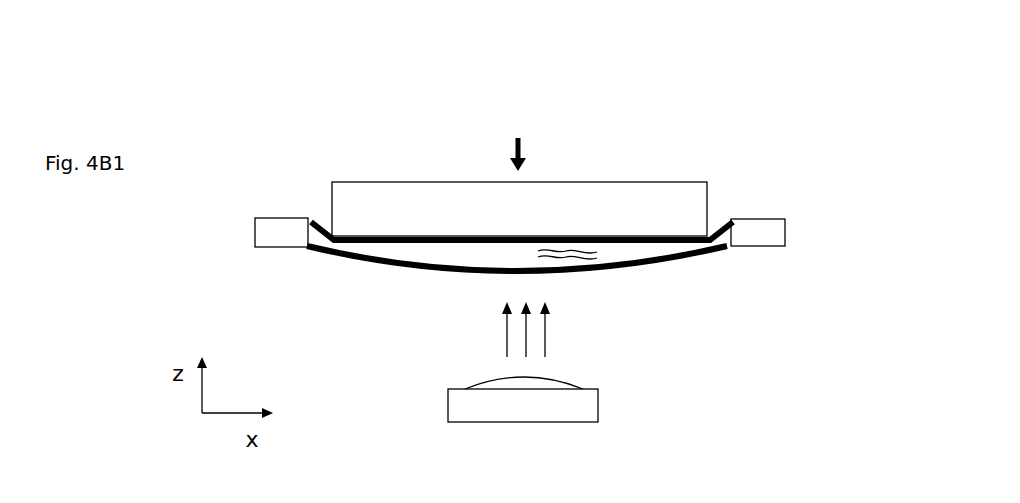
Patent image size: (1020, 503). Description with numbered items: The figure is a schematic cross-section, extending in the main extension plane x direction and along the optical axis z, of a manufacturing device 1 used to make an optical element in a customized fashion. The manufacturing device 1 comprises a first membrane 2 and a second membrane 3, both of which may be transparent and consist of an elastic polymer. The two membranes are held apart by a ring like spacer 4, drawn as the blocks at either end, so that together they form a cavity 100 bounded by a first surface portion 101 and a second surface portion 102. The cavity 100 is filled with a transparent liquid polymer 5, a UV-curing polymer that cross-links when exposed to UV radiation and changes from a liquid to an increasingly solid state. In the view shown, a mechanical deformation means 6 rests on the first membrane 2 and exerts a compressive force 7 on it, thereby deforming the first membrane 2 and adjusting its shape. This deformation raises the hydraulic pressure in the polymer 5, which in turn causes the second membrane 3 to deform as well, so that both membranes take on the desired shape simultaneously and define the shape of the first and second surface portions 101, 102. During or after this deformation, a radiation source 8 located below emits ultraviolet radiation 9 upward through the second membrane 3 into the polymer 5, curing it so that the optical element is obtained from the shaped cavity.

The manufacturing device 1 is at (666, 40).
The first membrane 2 is at (690, 237).
The second membrane 3 is at (690, 263).
The ring like spacer 4 is at (752, 237).
The transparent liquid polymer 5 is at (598, 252).
The mechanical deformation means 6 is at (430, 182).
The compressive force 7 is at (510, 150).
The radiation source 8 is at (598, 400).
The ultraviolet radiation 9 is at (545, 325).
The cavity 100 is at (410, 250).
The first surface portion 101 is at (473, 250).
The second surface portion 102 is at (504, 260).